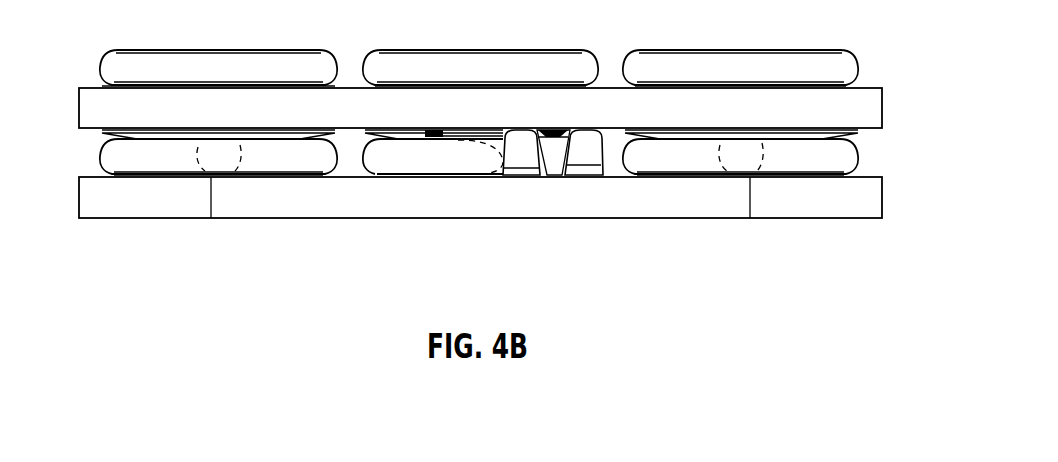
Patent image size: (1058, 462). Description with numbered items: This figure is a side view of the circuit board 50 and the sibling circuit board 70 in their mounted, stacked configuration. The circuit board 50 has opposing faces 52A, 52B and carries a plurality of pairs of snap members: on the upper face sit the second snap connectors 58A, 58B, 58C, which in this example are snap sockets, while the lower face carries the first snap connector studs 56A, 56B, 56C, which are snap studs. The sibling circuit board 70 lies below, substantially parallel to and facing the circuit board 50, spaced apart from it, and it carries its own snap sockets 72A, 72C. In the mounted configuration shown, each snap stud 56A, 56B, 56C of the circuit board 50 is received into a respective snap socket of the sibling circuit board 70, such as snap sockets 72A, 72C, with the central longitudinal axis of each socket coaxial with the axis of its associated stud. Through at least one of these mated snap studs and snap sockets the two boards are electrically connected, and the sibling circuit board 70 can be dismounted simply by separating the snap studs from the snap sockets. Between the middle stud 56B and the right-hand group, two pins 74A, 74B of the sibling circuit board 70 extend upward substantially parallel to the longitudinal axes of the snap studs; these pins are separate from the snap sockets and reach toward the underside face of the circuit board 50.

The circuit board 50 is at (888, 107).
The first face 52A is at (877, 136).
The second face 52B is at (608, 82).
The first snap connector stud 56A is at (203, 167).
The first snap connector stud 56B is at (473, 152).
The first snap connector stud 56C is at (755, 165).
The second snap connector 58A is at (126, 43).
The second snap connector 58B is at (408, 57).
The second snap connector 58C is at (782, 62).
The sibling circuit board 70 is at (890, 204).
The snap socket 72A is at (292, 165).
The snap socket 72C is at (830, 165).
The pin 74A is at (592, 170).
The pin 74B is at (520, 170).